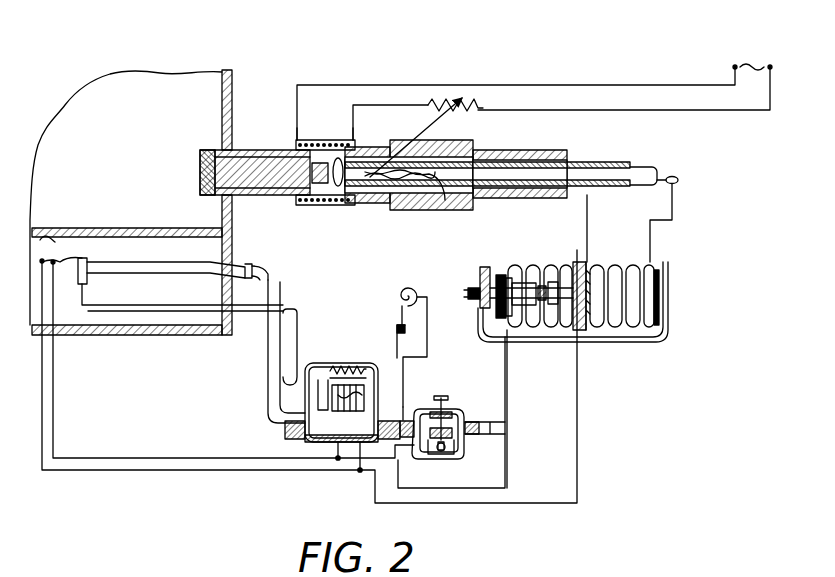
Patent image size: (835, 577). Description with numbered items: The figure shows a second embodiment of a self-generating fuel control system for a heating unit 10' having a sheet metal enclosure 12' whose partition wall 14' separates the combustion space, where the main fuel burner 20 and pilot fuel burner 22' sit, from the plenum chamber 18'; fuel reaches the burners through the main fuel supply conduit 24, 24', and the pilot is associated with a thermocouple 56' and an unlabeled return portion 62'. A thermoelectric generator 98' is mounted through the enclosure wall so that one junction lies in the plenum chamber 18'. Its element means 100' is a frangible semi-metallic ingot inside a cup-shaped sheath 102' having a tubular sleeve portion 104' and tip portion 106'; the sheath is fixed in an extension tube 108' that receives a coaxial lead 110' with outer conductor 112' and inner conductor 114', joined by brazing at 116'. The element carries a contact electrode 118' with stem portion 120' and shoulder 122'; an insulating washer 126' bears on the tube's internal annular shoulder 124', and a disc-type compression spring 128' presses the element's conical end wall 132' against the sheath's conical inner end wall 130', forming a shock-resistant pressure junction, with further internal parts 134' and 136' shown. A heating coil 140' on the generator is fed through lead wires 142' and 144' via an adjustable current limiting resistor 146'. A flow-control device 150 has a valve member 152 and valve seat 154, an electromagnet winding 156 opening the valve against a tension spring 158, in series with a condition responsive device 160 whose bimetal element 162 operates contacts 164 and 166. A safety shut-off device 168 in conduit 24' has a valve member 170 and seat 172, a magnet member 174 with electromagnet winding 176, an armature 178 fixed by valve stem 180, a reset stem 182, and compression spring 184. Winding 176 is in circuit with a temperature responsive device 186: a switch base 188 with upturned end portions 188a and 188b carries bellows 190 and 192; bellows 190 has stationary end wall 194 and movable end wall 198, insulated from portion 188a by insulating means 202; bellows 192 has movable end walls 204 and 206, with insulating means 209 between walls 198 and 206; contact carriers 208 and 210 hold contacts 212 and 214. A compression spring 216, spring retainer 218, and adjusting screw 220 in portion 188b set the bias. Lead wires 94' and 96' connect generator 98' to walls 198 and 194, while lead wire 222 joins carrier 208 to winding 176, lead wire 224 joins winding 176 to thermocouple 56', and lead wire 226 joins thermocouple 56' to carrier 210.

The heating unit 10' is at (258, 51).
The sheet metal enclosure 12' is at (251, 202).
The partition wall 14' is at (127, 269).
The plenum chamber 18' is at (126, 198).
The main fuel burner 20 is at (172, 276).
The pilot fuel burner 22' is at (78, 264).
The main fuel conduit 24' is at (193, 351).
The main fuel supply conduit 24 is at (466, 415).
The thermocouple 56' is at (54, 223).
The heat exchanger sleeve 62' is at (298, 333).
The lead wire 94' is at (595, 225).
The lead wire 96' is at (680, 216).
The thermoelectric generator 98' is at (409, 163).
The thermocouple element means 100' is at (255, 186).
The sheath member 102' is at (199, 137).
The tubular sleeve portion 104' is at (248, 129).
The tip portion 106' is at (192, 205).
The extension tube 108' is at (496, 133).
The thermoelectric generator lead 110' is at (501, 163).
The outer conductor 112' is at (618, 197).
The inner conductor 114' is at (684, 163).
The soldered connection 116' is at (537, 163).
The contact electrode 118' is at (305, 145).
The stem portion 120' is at (400, 143).
The shoulder 122' is at (321, 208).
The internal annular shoulder 124' is at (366, 152).
The insulating washer 126' is at (335, 192).
The compression spring 128' is at (368, 113).
The conical inner end wall 130' is at (181, 171).
The conical end wall 132' is at (177, 182).
The return wire 134' is at (405, 203).
The lens element 136' is at (366, 190).
The heating coil 140' is at (325, 128).
The lead wire 142' is at (534, 100).
The lead wire 144' is at (624, 89).
The current limiting resistor 146' is at (424, 132).
The flow-control device 150 is at (310, 364).
The valve member 152 is at (308, 436).
The valve seat 154 is at (292, 428).
The electromagnet winding 156 is at (388, 352).
The tension spring 158 is at (342, 380).
The condition responsive circuit controlling device 160 is at (410, 288).
The bimetal element 162 is at (402, 286).
The electrical contact 164 is at (400, 324).
The electrical contact 166 is at (396, 328).
The safety shut-off device 168 is at (462, 380).
The valve member 170 is at (448, 410).
The valve seat 172 is at (452, 415).
The magnet member 174 is at (450, 452).
The electromagnet winding 176 is at (450, 464).
The armature 178 is at (454, 438).
The valve stem 180 is at (438, 452).
The reset stem 182 is at (440, 396).
The compression spring 184 is at (398, 460).
The temperature responsive circuit controlling device 186 is at (542, 350).
The switch base 188 is at (640, 346).
The upturned end portion 188a is at (663, 282).
The upturned end portion 188b is at (468, 289).
The bellows 190 is at (600, 264).
The bellows 192 is at (536, 246).
The stationary end wall 194 is at (652, 252).
The movable end wall 198 is at (587, 262).
The electrical insulating means 202 is at (667, 304).
The movable end wall 204 is at (498, 260).
The movable end wall 206 is at (590, 250).
The contact carrier 208 is at (528, 256).
The electrical insulating means 209 is at (574, 336).
The contact carrier 210 is at (558, 262).
The electrical contact 212 is at (542, 320).
The electrical contact 214 is at (558, 320).
The compression spring 216 is at (484, 267).
The spring retainer 218 is at (482, 270).
The adjusting screw 220 is at (468, 302).
The lead wire 222 is at (505, 416).
The lead wire 224 is at (182, 454).
The lead wire 226 is at (208, 470).